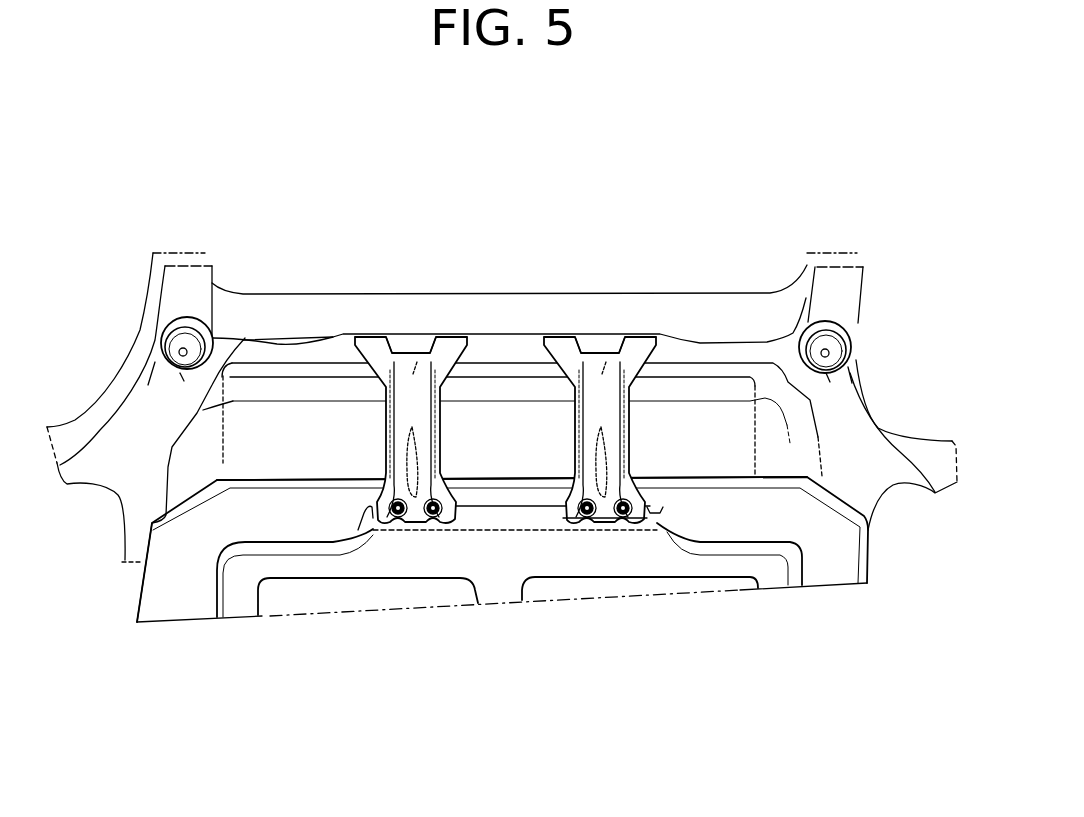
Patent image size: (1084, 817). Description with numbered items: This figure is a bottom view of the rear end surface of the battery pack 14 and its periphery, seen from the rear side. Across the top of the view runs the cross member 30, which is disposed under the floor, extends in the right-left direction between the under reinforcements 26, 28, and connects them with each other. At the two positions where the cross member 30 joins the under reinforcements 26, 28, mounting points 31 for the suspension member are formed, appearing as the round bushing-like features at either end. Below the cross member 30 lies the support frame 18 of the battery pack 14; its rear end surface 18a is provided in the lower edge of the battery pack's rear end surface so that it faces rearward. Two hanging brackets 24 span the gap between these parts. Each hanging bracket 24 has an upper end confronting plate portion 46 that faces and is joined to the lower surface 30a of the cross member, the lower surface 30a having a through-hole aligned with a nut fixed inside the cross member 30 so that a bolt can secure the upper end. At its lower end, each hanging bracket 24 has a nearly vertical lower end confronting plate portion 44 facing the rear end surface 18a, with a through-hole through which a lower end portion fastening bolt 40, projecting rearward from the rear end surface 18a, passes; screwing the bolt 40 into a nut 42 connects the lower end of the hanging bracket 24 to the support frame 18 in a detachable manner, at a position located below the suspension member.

The battery pack 14 is at (200, 460).
The support frame 18 is at (297, 567).
The rear end surface of the support frame 18a is at (503, 520).
The hanging bracket 24 is at (413, 375).
The under reinforcement 26 is at (180, 287).
The under reinforcement 28 is at (840, 293).
The cross member 30 is at (730, 313).
The lower surface of the cross member 30a is at (303, 353).
The mounting point 31 is at (178, 362).
The lower end portion fastening bolt 40 is at (610, 520).
The nut 42 is at (623, 518).
The lower end confronting plate portion 44 is at (392, 518).
The upper end confronting plate portion 46 is at (347, 353).